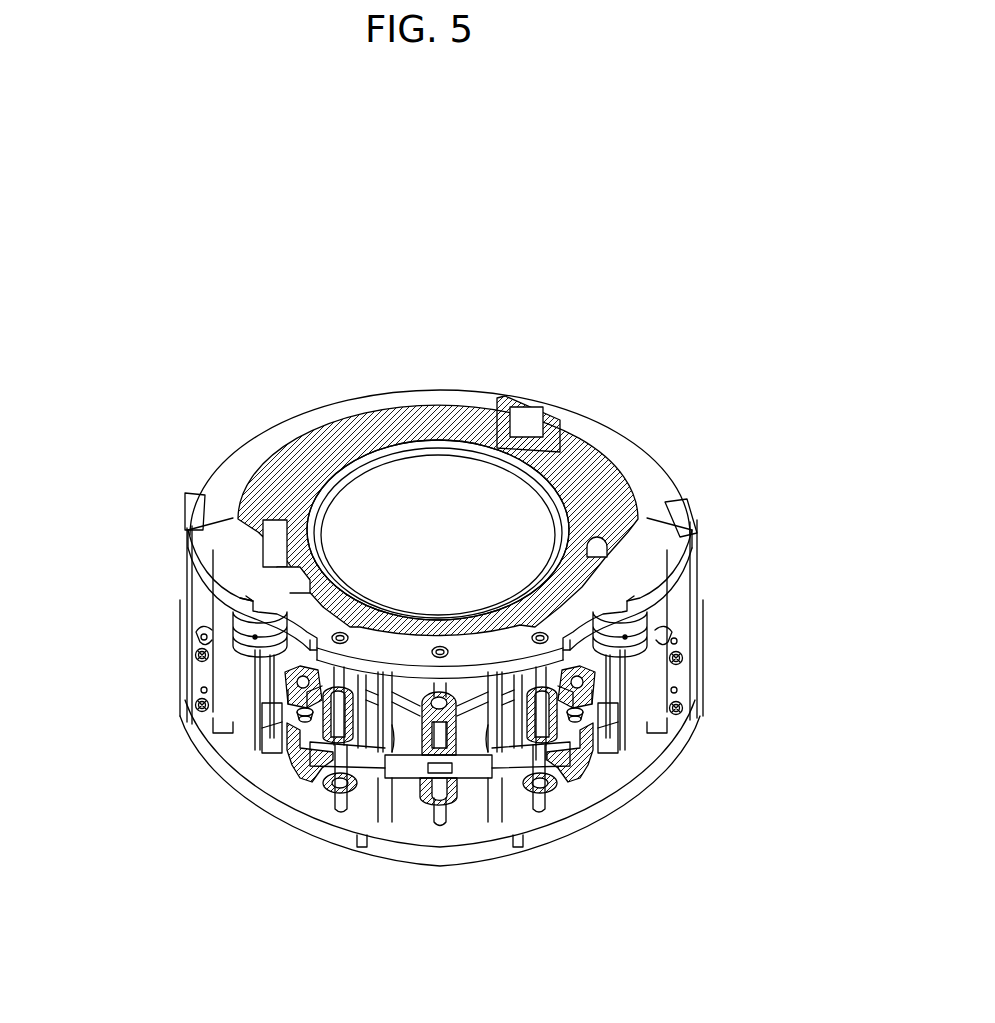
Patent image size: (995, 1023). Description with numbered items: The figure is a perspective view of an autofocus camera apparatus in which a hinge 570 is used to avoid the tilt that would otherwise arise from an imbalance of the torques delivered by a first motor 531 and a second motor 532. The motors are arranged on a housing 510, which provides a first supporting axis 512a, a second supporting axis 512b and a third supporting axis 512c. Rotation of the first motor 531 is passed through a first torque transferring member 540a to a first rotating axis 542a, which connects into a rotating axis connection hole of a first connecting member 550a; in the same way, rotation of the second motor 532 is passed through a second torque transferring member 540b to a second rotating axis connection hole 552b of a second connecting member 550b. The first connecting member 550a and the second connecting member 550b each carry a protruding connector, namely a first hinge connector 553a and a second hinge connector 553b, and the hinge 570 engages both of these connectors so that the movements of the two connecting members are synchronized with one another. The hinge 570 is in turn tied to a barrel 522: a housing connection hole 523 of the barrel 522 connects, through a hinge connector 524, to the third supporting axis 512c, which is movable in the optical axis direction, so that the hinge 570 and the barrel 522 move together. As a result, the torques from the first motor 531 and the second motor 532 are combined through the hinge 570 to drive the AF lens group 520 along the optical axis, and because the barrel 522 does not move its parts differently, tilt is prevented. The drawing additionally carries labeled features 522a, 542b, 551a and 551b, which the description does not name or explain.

The housing 510 is at (617, 462).
The AF lens group 520 is at (437, 466).
The barrel 522 is at (316, 432).
The protrusion of lens holder 522a is at (303, 682).
The housing connection hole 523 is at (447, 706).
The hinge connector 524 is at (430, 807).
The first motor 531 is at (210, 672).
The second motor 532 is at (682, 694).
The first torque transferring member 540a is at (297, 707).
The second torque transferring member 540b is at (588, 706).
The first rotating axis 542a is at (330, 712).
The second sleeve 542b is at (550, 714).
The first connecting member 550a is at (317, 722).
The second connecting member 550b is at (563, 724).
The first bracket 551a is at (331, 786).
The second bracket 551b is at (583, 752).
The second rotating axis connection hole 552b is at (577, 692).
The first hinge connector 553a is at (295, 750).
The second hinge connector 553b is at (549, 786).
The first supporting axis 512a is at (342, 811).
The second supporting axis 512b is at (440, 822).
The third supporting axis 512c is at (538, 811).
The hinge 570 is at (399, 768).